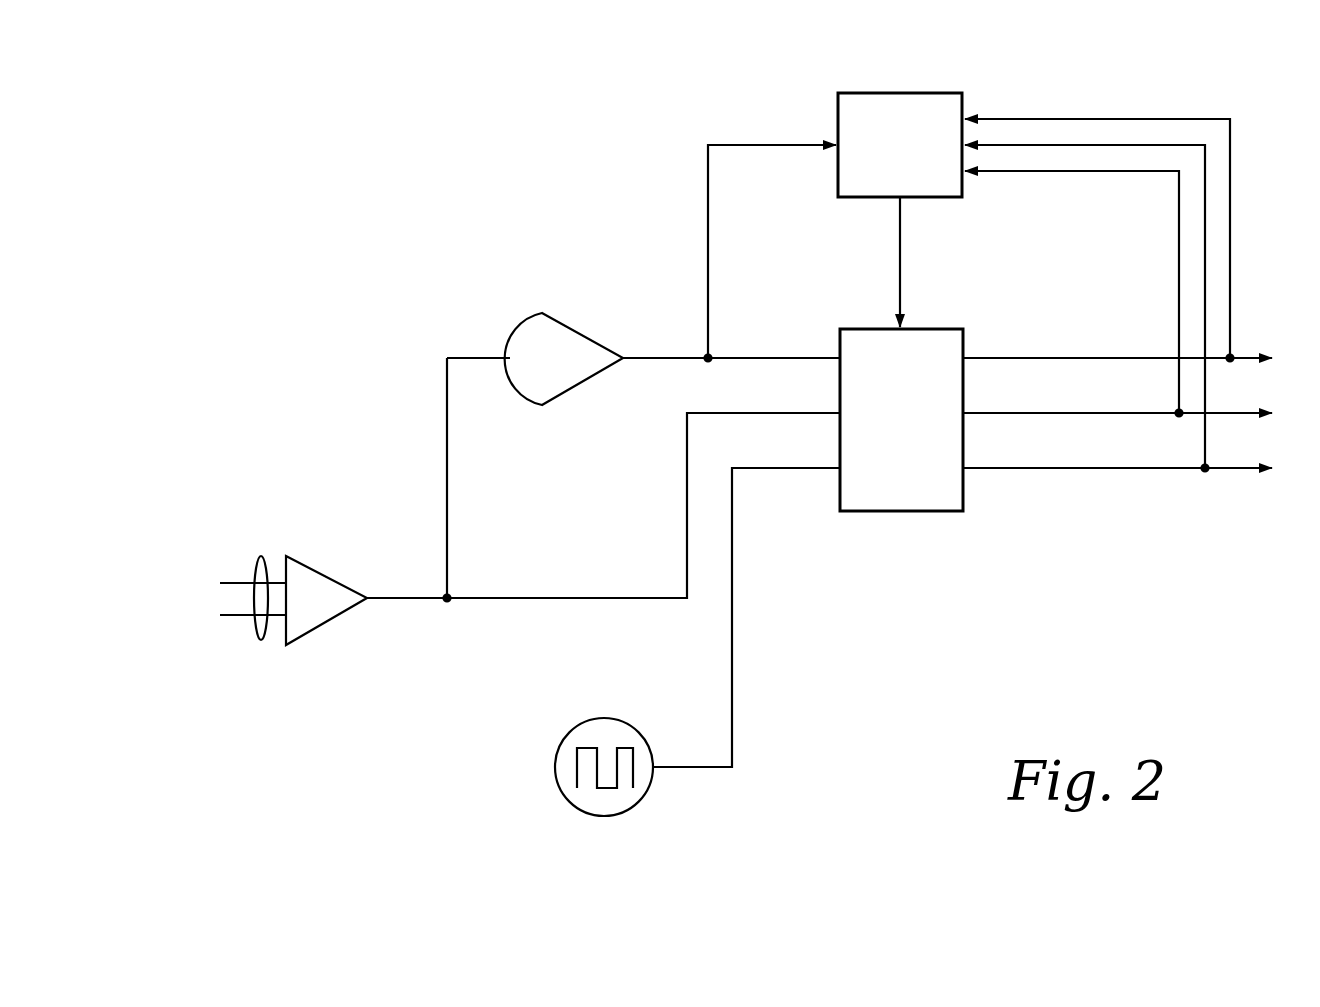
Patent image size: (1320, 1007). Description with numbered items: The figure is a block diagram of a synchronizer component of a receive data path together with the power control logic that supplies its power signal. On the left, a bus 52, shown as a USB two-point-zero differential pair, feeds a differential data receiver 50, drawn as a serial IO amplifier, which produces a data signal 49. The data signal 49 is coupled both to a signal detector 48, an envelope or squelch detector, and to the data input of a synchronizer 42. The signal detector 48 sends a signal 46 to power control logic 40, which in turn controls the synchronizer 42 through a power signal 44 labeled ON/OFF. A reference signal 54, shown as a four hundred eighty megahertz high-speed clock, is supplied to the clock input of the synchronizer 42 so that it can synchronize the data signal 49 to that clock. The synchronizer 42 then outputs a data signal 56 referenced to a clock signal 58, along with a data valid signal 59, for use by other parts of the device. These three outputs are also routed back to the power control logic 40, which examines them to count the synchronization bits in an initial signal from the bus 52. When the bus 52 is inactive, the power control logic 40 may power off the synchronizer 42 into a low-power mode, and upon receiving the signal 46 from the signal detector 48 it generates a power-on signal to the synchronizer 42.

The power control logic 40 is at (940, 106).
The synchronizer 42 is at (948, 503).
The power signal 44 is at (900, 228).
The signal 46 is at (767, 145).
The signal detector 48 is at (530, 328).
The data signal 49 is at (570, 598).
The differential data receiver 50 is at (310, 580).
The bus 52 is at (258, 565).
The reference signal 54 is at (625, 797).
The data signal 56 is at (1247, 412).
The clock signal 58 is at (1247, 467).
The data valid signal 59 is at (1247, 357).